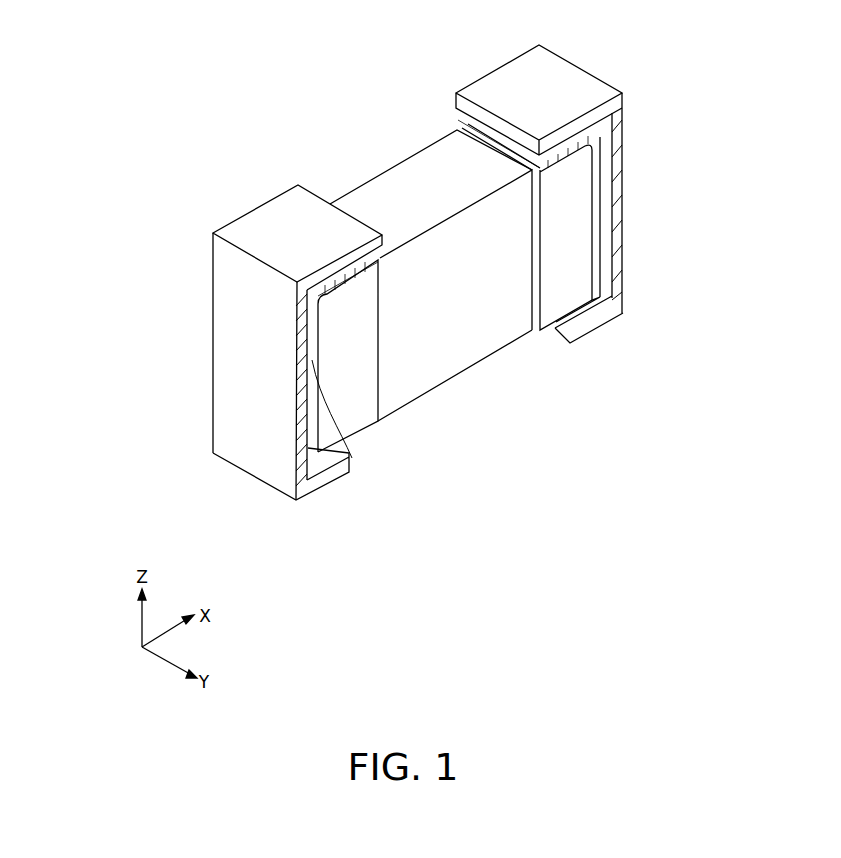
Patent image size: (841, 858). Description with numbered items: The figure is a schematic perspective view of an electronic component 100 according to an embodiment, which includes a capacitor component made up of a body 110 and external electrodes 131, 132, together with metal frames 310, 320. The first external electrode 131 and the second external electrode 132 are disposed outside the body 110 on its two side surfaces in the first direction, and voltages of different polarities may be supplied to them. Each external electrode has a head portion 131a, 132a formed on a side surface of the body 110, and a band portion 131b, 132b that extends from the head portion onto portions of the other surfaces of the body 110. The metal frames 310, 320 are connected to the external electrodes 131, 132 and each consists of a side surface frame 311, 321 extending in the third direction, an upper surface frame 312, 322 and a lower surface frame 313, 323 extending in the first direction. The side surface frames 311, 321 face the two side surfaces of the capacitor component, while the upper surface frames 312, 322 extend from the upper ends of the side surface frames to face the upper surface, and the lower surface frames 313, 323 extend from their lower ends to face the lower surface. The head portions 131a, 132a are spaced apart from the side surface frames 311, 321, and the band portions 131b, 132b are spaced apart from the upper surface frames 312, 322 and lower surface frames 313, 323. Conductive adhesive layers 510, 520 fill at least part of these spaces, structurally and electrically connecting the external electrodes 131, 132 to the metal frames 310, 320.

The electronic component 100 is at (485, 366).
The body 110 is at (407, 383).
The first external electrode 131 is at (385, 434).
The head portion 131a is at (357, 368).
The band portion 131b is at (370, 432).
The second external electrode 132 is at (560, 284).
The head portion 132a is at (582, 250).
The band portion 132b is at (563, 263).
The first metal frame 310 is at (229, 352).
The side surface frame 311 is at (240, 350).
The upper surface frame 312 is at (281, 226).
The lower surface frame 313 is at (246, 483).
The second metal frame 320 is at (611, 194).
The side surface frame 321 is at (617, 191).
The upper surface frame 322 is at (600, 80).
The lower surface frame 323 is at (629, 319).
The conductive adhesive layer 510 is at (340, 262).
The conductive adhesive layer 520 is at (568, 145).